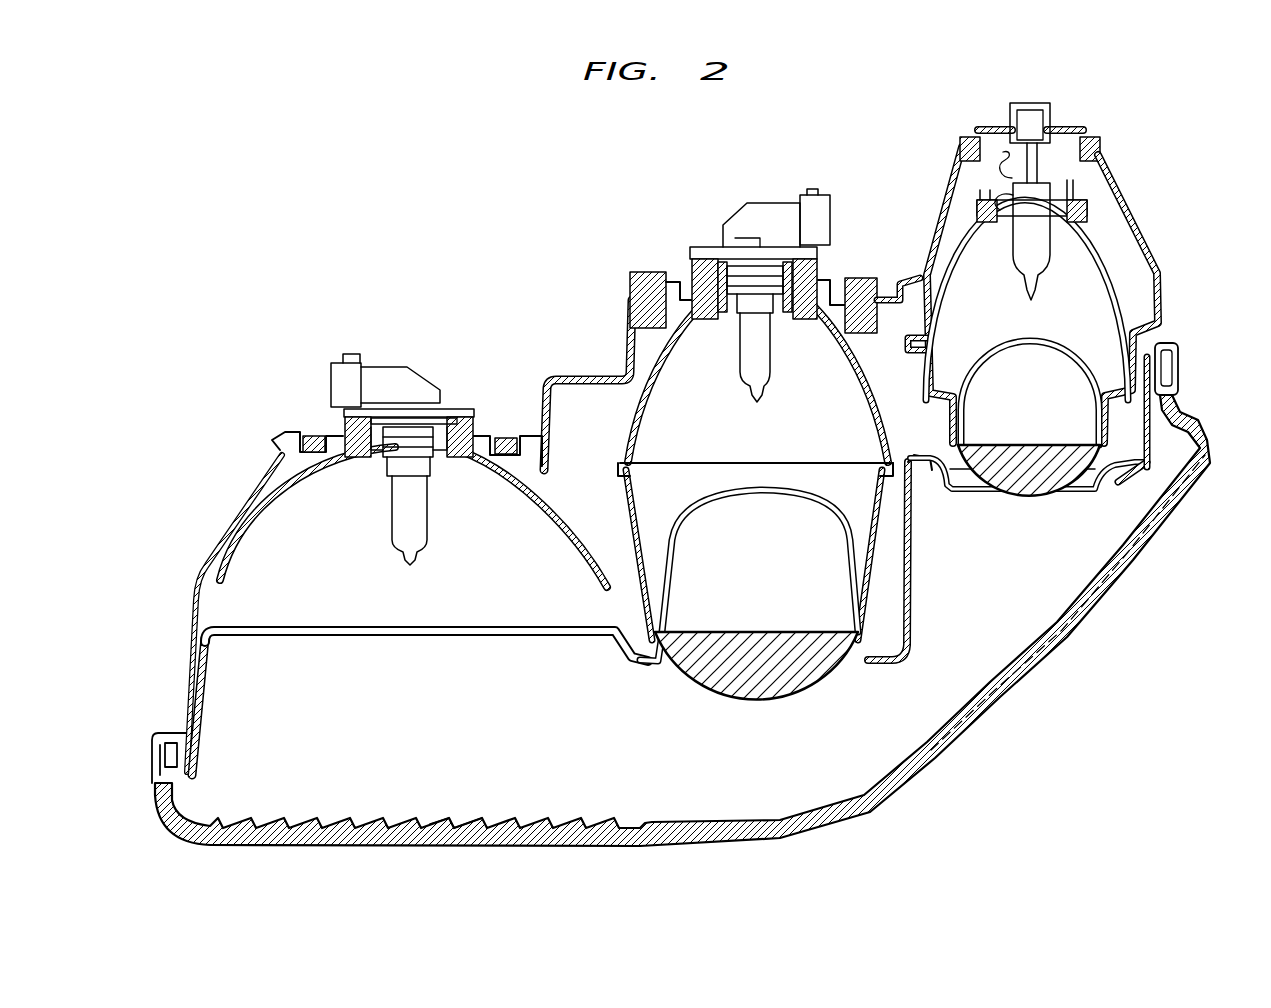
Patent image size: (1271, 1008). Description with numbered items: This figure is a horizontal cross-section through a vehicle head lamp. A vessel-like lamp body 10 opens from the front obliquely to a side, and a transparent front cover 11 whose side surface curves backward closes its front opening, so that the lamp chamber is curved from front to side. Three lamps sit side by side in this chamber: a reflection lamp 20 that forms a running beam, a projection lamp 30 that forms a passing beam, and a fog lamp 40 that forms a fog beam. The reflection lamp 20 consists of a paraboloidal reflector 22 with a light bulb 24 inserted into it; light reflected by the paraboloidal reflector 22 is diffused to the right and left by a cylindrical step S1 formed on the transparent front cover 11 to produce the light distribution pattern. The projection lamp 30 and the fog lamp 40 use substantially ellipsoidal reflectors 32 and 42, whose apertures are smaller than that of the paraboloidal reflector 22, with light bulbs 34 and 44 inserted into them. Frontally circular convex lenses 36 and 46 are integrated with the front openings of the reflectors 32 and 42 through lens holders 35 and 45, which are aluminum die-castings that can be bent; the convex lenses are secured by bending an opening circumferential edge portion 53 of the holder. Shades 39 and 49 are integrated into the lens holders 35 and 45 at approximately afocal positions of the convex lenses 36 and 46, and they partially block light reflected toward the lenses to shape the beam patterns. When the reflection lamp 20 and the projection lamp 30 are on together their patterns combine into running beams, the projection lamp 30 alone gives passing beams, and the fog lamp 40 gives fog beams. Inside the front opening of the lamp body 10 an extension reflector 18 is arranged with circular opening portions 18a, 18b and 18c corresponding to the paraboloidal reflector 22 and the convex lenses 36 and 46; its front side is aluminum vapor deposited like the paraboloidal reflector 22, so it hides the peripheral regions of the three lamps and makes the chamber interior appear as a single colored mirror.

The lamp body 10 is at (570, 378).
The transparent front cover 11 is at (600, 846).
The extension reflector 18 is at (669, 615).
The circular opening portion 18a is at (590, 640).
The circular opening portion 18b is at (668, 665).
The circular opening portion 18c is at (965, 490).
The reflection lamp 20 is at (386, 547).
The paraboloidal reflector 22 is at (248, 514).
The light bulb 24 is at (397, 507).
The projection lamp 30 is at (731, 489).
The ellipsoidal reflector 32 is at (648, 370).
The light bulb 34 is at (755, 340).
The lens holder 35 is at (640, 543).
The convex lens 36 is at (747, 703).
The shade 39 is at (760, 495).
The fog lamp 40 is at (1069, 377).
The ellipsoidal reflector 42 is at (1114, 270).
The light bulb 44 is at (1052, 267).
The lens holder 45 is at (1152, 373).
The convex lens 46 is at (1052, 480).
The shade 49 is at (1053, 347).
The opening circumferential edge portion 53 is at (1100, 480).
The cylindrical step S1 is at (458, 835).